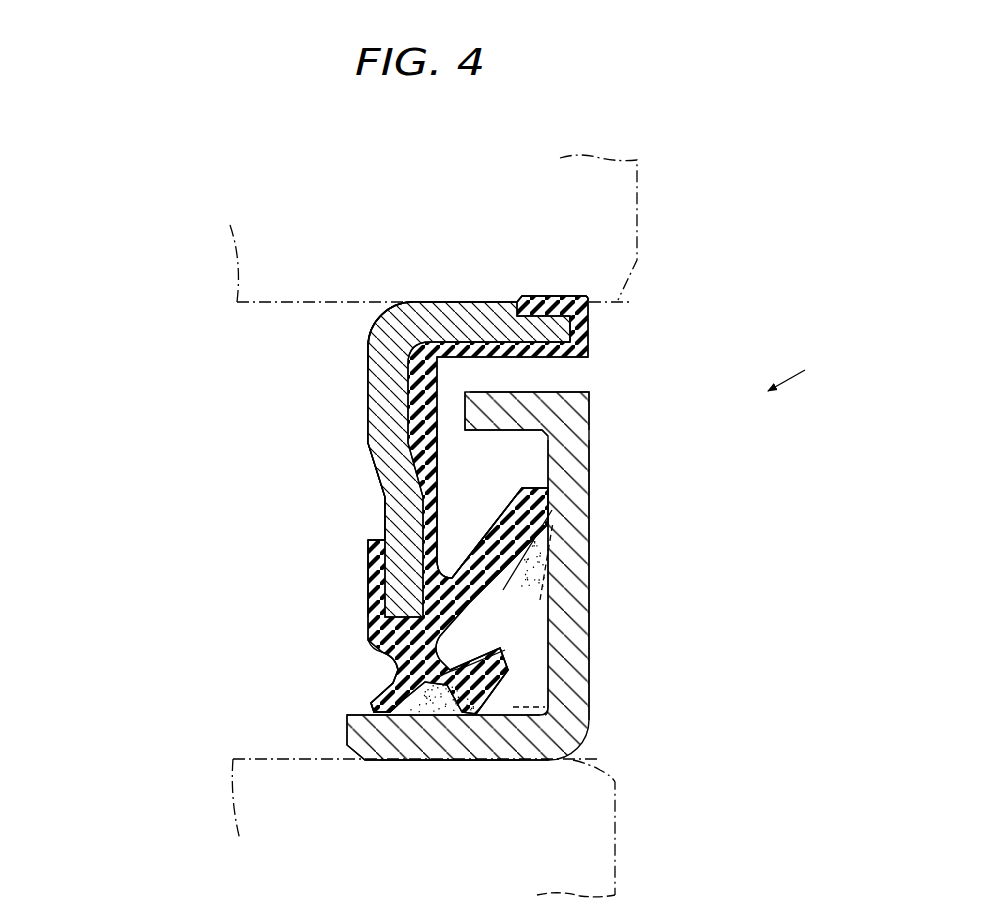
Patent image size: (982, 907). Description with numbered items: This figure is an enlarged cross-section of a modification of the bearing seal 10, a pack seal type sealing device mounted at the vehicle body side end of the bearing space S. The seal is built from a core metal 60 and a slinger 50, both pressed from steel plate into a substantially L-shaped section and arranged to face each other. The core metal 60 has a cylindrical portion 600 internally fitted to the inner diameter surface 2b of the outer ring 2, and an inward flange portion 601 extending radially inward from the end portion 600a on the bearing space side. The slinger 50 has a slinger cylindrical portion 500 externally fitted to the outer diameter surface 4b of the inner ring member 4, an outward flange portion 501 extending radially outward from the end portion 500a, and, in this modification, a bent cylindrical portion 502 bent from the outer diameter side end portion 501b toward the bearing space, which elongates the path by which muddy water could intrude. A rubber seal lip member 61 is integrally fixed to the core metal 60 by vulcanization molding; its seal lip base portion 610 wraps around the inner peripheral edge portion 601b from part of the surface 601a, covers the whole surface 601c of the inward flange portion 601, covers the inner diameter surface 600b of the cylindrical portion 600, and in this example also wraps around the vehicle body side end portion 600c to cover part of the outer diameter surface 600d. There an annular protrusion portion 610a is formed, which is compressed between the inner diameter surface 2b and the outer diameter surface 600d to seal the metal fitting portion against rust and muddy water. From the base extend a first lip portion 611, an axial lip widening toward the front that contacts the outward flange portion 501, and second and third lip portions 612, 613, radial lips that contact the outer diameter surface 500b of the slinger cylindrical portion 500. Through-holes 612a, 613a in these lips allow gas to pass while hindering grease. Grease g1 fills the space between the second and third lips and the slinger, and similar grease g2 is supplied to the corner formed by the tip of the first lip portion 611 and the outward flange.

The outer ring 2 is at (627, 197).
The inner diameter surface 2b is at (270, 305).
The inner ring member 4 is at (597, 856).
The outer diameter surface 4b is at (262, 759).
The bearing seal 10 is at (801, 373).
The slinger 50 is at (835, 525).
The slinger cylindrical portion 500 is at (460, 760).
The end portion 500a is at (543, 740).
The outer diameter surface 500b is at (400, 760).
The outward flange portion 501 is at (567, 652).
The outer diameter side end portion 501b is at (522, 398).
The bent cylindrical portion 502 is at (505, 392).
The core metal 60 is at (202, 353).
The cylindrical portion 600 is at (443, 302).
The end portion 600a is at (385, 352).
The inner diameter surface 600b is at (493, 350).
The vehicle body side end portion 600c is at (588, 322).
The outer diameter surface 600d is at (472, 300).
The inward flange portion 601 is at (388, 455).
The surface 601a is at (372, 556).
The inner peripheral edge portion 601b is at (378, 623).
The surface 601c is at (392, 516).
The seal lip base portion 610 is at (388, 493).
The annular protrusion portion 610a is at (540, 297).
The first lip portion 611 is at (549, 496).
The second lip portion 612 is at (380, 714).
The through-hole 612a is at (385, 700).
The third lip portion 613 is at (573, 707).
The through-hole 613a is at (470, 628).
The seal lip member 61 is at (462, 488).
The grease g1 is at (437, 714).
The grease g2 is at (560, 524).
The bearing space S is at (155, 553).